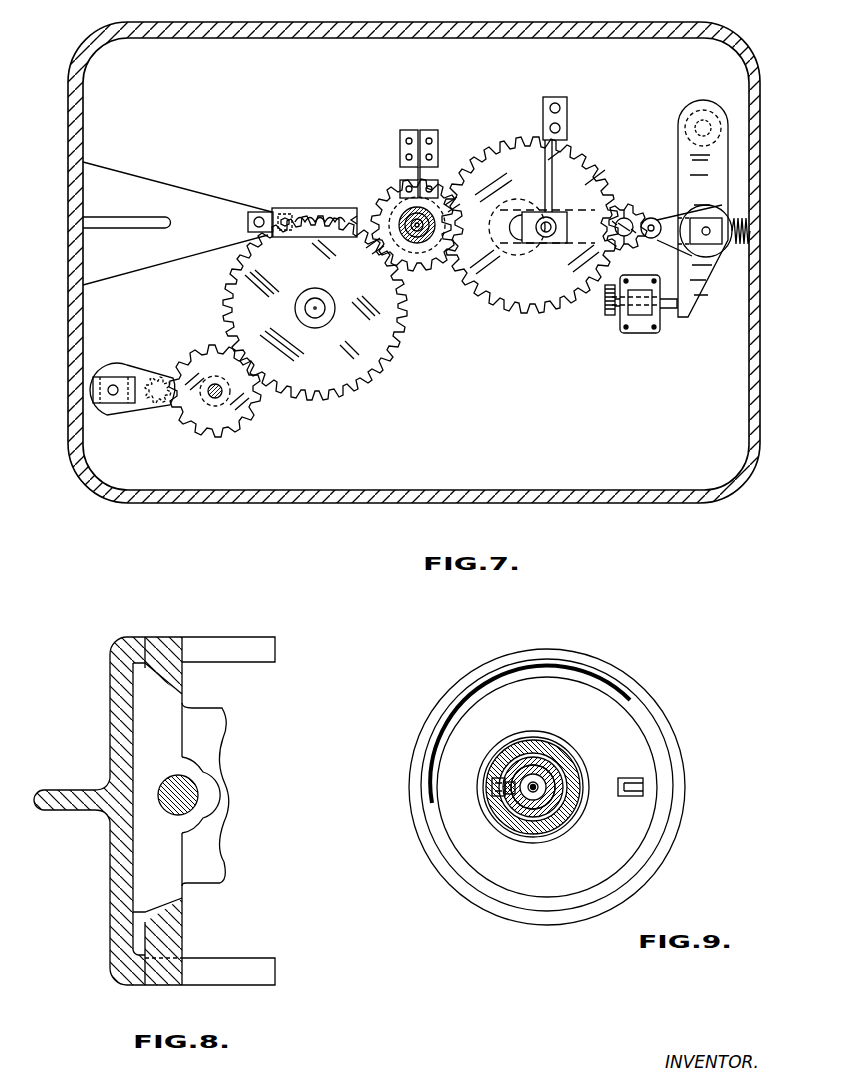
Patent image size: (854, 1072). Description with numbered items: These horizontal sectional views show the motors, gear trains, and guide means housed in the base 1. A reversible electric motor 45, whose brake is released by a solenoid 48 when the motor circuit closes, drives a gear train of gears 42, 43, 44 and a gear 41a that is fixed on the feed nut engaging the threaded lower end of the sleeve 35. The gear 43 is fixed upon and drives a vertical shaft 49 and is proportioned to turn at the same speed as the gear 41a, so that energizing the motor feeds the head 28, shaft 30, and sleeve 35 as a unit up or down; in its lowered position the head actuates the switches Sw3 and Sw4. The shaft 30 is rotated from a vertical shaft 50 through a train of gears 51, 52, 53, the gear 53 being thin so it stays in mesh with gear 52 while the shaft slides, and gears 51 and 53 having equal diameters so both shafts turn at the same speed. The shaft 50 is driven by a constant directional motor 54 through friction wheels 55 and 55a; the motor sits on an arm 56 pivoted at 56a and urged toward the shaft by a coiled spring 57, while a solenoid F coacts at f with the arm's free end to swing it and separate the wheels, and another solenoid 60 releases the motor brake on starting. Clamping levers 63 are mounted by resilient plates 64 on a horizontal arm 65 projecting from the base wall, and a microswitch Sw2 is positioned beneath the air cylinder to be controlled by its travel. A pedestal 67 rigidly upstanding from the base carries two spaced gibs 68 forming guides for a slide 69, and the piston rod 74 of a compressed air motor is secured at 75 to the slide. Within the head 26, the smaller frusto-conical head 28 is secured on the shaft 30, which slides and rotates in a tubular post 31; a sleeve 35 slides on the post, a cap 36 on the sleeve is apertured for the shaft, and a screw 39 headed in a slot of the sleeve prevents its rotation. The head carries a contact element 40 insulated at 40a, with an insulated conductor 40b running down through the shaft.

In FIG. 7, the base 1 is at (72, 167).
In FIG. 7, the horizontal arm 65 is at (218, 204).
In FIG. 7, the plates 64 is at (258, 212).
In FIG. 7, the clamping levers 63 is at (313, 208).
In FIG. 7, the gear 41a is at (378, 212).
In FIG. 7, the gear 53 is at (430, 266).
In FIG. 7, the switch Sw3 is at (400, 181).
In FIG. 7, the switch Sw4 is at (439, 181).
In FIG. 7, the gear 44 is at (305, 358).
In FIG. 7, the gear 52 is at (472, 298).
In FIG. 7, the microswitch Sw2 is at (536, 179).
In FIG. 7, the vertical shaft 50 is at (636, 214).
In FIG. 7, the gear 51 is at (616, 209).
In FIG. 7, the friction wheel 55 is at (653, 239).
In FIG. 7, the friction wheel 55a is at (614, 249).
In FIG. 7, the constant directional electric motor 54 is at (672, 217).
In FIG. 7, the arm 56 is at (703, 208).
In FIG. 7, the pivot 56a is at (690, 138).
In FIG. 7, the solenoid 60 is at (722, 205).
In FIG. 7, the coiled spring 57 is at (735, 250).
In FIG. 7, the solenoid F is at (642, 333).
In FIG. 7, the coacting point f is at (665, 308).
In FIG. 7, the gear 43 is at (196, 428).
In FIG. 7, the vertical shaft 49 is at (213, 386).
In FIG. 7, the reversible electric motor 45 is at (128, 365).
In FIG. 7, the solenoid 48 is at (112, 415).
In FIG. 7, the gear 42 is at (164, 409).
In FIG. 8, the pedestal 67 is at (110, 866).
In FIG. 8, the gibs 68 is at (182, 677).
In FIG. 8, the slide 69 is at (188, 796).
In FIG. 8, the piston rod 74 is at (198, 796).
In FIG. 8, the securing point 75 is at (204, 774).
In FIG. 9, the head 26 is at (649, 692).
In FIG. 9, the head 28 is at (598, 696).
In FIG. 9, the shaft 30 is at (532, 781).
In FIG. 9, the tubular post 31 is at (542, 762).
In FIG. 9, the sleeve 35 is at (557, 753).
In FIG. 9, the cap 36 is at (584, 765).
In FIG. 9, the screw 39 is at (492, 792).
In FIG. 9, the contact element 40 is at (643, 790).
In FIG. 9, the insulation 40a is at (631, 778).
In FIG. 9, the insulated conductor 40b is at (532, 790).